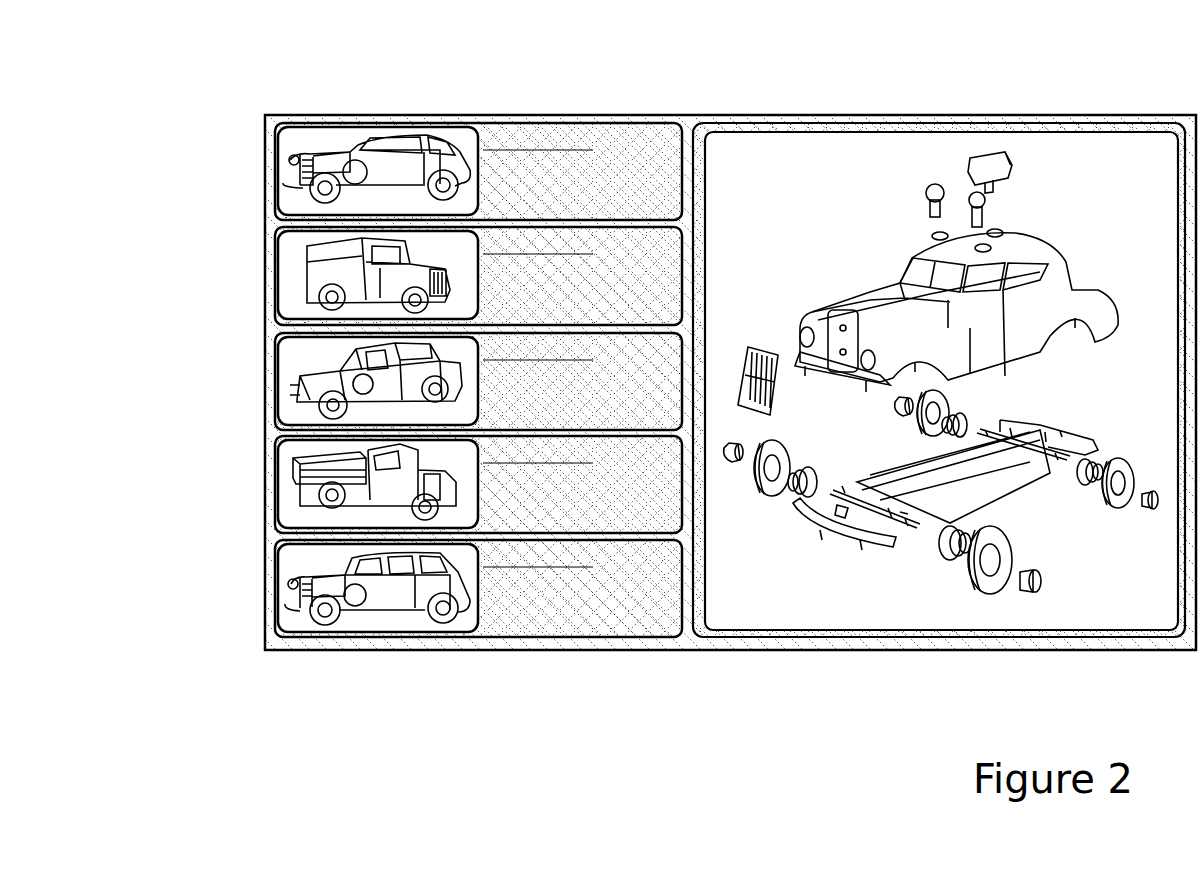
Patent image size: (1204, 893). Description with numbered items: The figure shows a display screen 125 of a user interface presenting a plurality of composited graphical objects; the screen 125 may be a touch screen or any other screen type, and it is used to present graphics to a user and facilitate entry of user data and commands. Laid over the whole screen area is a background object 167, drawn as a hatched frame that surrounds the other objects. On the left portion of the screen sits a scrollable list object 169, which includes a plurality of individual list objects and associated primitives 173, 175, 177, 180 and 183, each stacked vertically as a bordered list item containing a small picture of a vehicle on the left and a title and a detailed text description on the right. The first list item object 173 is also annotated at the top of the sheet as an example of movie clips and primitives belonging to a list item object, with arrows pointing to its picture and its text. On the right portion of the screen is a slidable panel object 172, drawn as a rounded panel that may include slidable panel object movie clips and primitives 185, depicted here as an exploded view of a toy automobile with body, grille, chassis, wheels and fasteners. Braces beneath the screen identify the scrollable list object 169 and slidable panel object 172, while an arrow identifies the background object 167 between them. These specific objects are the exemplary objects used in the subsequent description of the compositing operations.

The display screen 125 is at (748, 105).
The background object 167 is at (692, 646).
The scrollable list object 169 is at (275, 652).
The slidable panel object 172 is at (1193, 652).
The list object and associated primitives 173 is at (557, 87).
The list object and associated primitives 175 is at (265, 322).
The list object and associated primitives 177 is at (265, 427).
The list object and associated primitives 180 is at (265, 530).
The list object and associated primitives 183 is at (265, 634).
The slidable panel object movie clips and primitives 185 is at (820, 197).